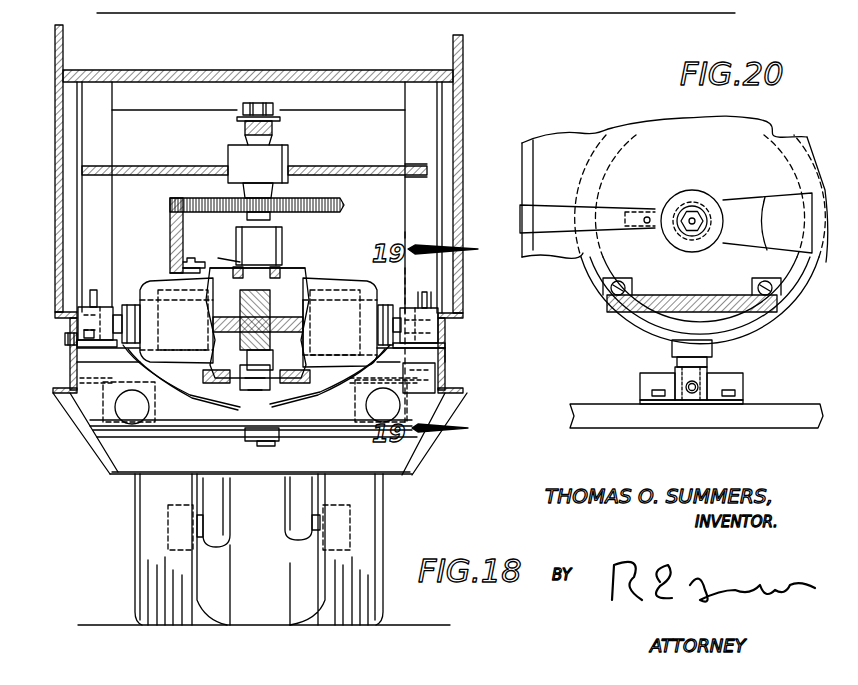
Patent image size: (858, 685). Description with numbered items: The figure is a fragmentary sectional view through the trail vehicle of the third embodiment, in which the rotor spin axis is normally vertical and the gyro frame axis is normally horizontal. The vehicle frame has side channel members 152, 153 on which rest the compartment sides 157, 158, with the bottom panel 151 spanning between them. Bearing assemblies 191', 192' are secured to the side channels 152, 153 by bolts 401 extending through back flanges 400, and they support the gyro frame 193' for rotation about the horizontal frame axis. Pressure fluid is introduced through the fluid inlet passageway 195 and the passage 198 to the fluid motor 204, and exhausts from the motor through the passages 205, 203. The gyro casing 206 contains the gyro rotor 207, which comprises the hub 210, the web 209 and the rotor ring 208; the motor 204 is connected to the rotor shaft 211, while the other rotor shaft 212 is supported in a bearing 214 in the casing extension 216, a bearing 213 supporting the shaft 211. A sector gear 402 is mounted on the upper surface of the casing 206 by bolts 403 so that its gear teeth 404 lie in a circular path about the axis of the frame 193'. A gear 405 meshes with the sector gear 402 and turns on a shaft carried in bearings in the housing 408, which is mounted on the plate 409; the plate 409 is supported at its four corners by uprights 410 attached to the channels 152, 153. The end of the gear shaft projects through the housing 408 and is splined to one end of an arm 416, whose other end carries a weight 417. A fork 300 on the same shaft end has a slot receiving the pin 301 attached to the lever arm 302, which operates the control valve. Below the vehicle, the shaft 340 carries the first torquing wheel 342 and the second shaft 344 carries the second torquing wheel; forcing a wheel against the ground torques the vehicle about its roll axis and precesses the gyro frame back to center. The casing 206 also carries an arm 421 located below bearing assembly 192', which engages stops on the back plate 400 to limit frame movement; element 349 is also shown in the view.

In FIG. 18, the bottom panel 151 is at (321, 70).
In FIG. 18, the side channel member 152 is at (72, 378).
In FIG. 20, the side channel member 152 is at (803, 421).
In FIG. 18, the side channel member 153 is at (446, 358).
In FIG. 18, the side 157 is at (55, 143).
In FIG. 18, the side 158 is at (464, 113).
In FIG. 18, the bearing assembly 191' is at (98, 303).
In FIG. 20, the bearing assembly 191' is at (721, 370).
In FIG. 18, the bearing assembly 192' is at (449, 307).
In FIG. 18, the gyro frame 193' is at (223, 246).
In FIG. 18, the fluid inlet passageway 195 is at (423, 296).
In FIG. 18, the passage 198 is at (320, 384).
In FIG. 18, the fluid outlet passage 203 is at (105, 298).
In FIG. 20, the fluid outlet passage 203 is at (693, 395).
In FIG. 18, the fluid motor 204 is at (265, 446).
In FIG. 18, the passage 205 is at (197, 394).
In FIG. 18, the casing 206 is at (355, 275).
In FIG. 18, the gyro rotor 207 is at (227, 312).
In FIG. 18, the rotor ring 208 is at (165, 332).
In FIG. 18, the web 209 is at (292, 333).
In FIG. 18, the hub 210 is at (248, 338).
In FIG. 18, the rotor shaft 211 is at (250, 360).
In FIG. 18, the rotor shaft 212 is at (272, 320).
In FIG. 18, the bearing 213 is at (272, 368).
In FIG. 18, the bearing 214 is at (277, 270).
In FIG. 18, the casing extension 216 is at (262, 237).
In FIG. 18, the fork 300 is at (240, 116).
In FIG. 20, the fork 300 is at (668, 241).
In FIG. 20, the pin 301 is at (646, 216).
In FIG. 20, the lever arm 302 is at (533, 213).
In FIG. 18, the shaft 340 is at (215, 520).
In FIG. 18, the first torquing wheel 342 is at (140, 566).
In FIG. 18, the second shaft 344 is at (295, 526).
In FIG. 18, the right leg 349 is at (385, 537).
In FIG. 18, the back flange 400 is at (82, 358).
In FIG. 20, the back flange 400 is at (717, 404).
In FIG. 18, the bolt 401 is at (65, 338).
In FIG. 20, the bolt 401 is at (650, 389).
In FIG. 18, the sector gear 402 is at (170, 216).
In FIG. 18, the bolt 403 is at (195, 278).
In FIG. 20, the bolt 403 is at (608, 296).
In FIG. 18, the gear teeth 404 is at (170, 238).
In FIG. 18, the gear 405 is at (322, 199).
In FIG. 18, the housing 408 is at (290, 158).
In FIG. 18, the plate 409 is at (200, 166).
In FIG. 18, the upright 410 is at (107, 147).
In FIG. 18, the arm 416 is at (278, 125).
In FIG. 20, the arm 416 is at (745, 213).
In FIG. 20, the weight 417 is at (788, 207).
In FIG. 18, the arm 421 is at (438, 372).